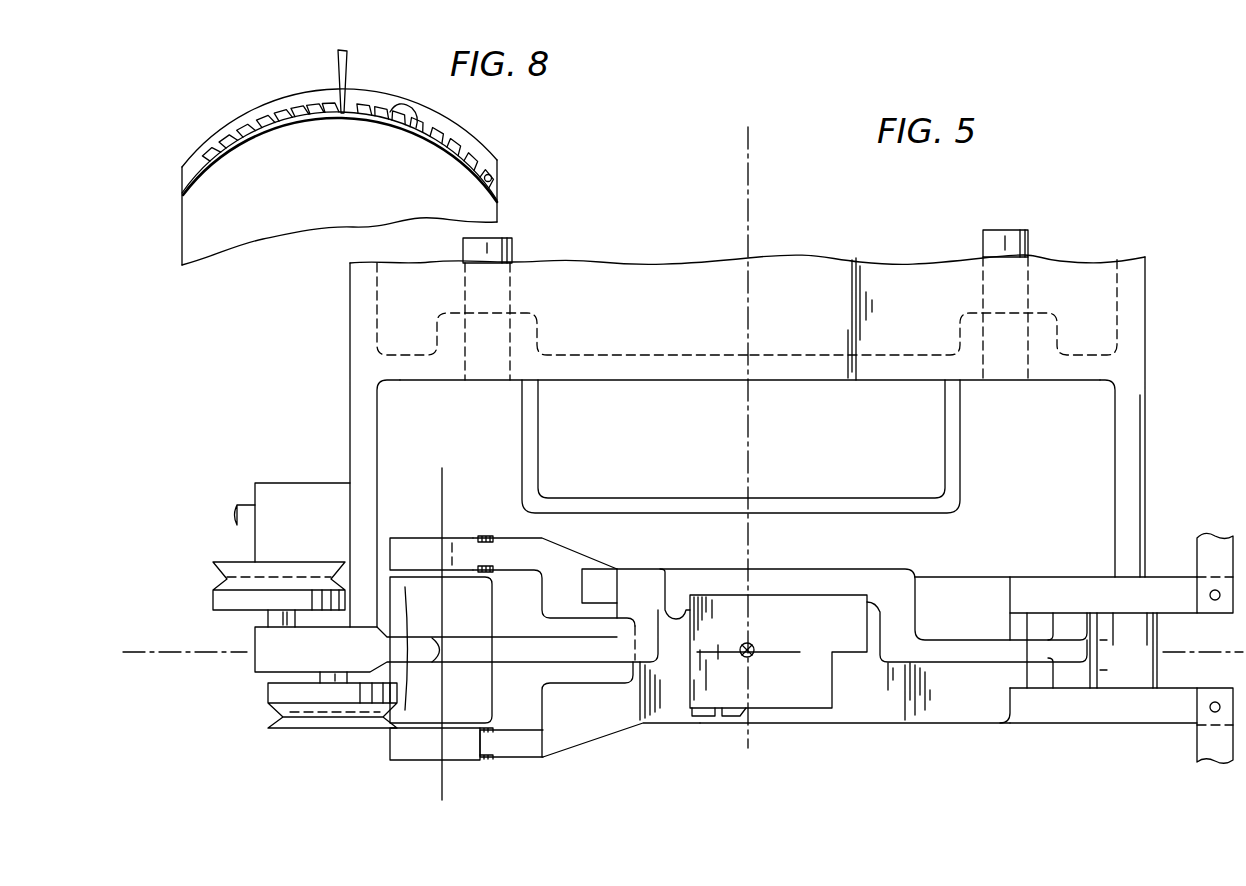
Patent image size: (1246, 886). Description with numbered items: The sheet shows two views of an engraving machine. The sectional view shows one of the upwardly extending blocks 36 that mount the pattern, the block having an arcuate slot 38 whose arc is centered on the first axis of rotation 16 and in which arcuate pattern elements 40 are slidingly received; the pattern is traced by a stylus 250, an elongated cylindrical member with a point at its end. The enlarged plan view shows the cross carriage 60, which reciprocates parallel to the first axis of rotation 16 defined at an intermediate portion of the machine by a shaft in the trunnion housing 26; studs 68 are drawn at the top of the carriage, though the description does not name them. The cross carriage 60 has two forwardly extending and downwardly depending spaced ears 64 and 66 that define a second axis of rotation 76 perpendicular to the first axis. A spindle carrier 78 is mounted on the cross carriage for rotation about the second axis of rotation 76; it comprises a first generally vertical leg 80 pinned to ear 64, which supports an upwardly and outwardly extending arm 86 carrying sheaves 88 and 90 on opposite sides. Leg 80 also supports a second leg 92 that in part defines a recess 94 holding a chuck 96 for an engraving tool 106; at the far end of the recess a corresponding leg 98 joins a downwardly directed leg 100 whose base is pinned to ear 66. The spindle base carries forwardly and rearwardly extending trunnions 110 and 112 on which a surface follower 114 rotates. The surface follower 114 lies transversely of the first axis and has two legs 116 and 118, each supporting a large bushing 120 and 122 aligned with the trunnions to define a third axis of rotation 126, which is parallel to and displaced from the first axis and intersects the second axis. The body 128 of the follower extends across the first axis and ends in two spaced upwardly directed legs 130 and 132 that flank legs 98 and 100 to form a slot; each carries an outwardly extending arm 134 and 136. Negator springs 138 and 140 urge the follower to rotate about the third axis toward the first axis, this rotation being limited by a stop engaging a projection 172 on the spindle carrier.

In FIG. 5, the first axis of rotation 16 is at (748, 152).
In FIG. 5, the trunnion housing 26 is at (640, 388).
In FIG. 8, the upwardly extending blocks 36 is at (187, 222).
In FIG. 8, the arcuate slot 38 is at (492, 179).
In FIG. 8, the arcuate pattern elements 40 is at (228, 140).
In FIG. 5, the cross carriage 60 is at (782, 263).
In FIG. 5, the ear 64 is at (351, 405).
In FIG. 5, the ear 66 is at (1146, 428).
In FIG. 5, the mounting studs 68 is at (506, 241).
In FIG. 5, the second axis of rotation 76 is at (148, 652).
In FIG. 5, the spindle carrier 78 is at (892, 570).
In FIG. 5, the first leg 80 is at (430, 680).
In FIG. 5, the arm 86 is at (413, 647).
In FIG. 5, the sheave 88 is at (220, 603).
In FIG. 5, the sheave 90 is at (270, 690).
In FIG. 5, the second leg 92 is at (540, 643).
In FIG. 5, the recess 94 is at (683, 604).
In FIG. 5, the chuck 96 is at (772, 695).
In FIG. 5, the leg 98 is at (942, 657).
In FIG. 5, the downwardly directed leg 100 is at (1070, 680).
In FIG. 5, the engraving tool 106 is at (752, 645).
In FIG. 5, the trunnion 110 is at (462, 708).
In FIG. 5, the trunnion 112 is at (467, 575).
In FIG. 5, the surface follower 114 is at (585, 741).
In FIG. 5, the leg 116 is at (557, 723).
In FIG. 5, the leg 118 is at (587, 548).
In FIG. 5, the bushing 120 is at (416, 745).
In FIG. 5, the bushing 122 is at (417, 540).
In FIG. 5, the third axis of rotation 126 is at (443, 502).
In FIG. 5, the body 128 is at (880, 707).
In FIG. 5, the upwardly directed leg 130 is at (1008, 707).
In FIG. 5, the upwardly directed leg 132 is at (1000, 580).
In FIG. 5, the outwardly extending arm 134 is at (1135, 705).
In FIG. 5, the outwardly extending arm 136 is at (1075, 587).
In FIG. 5, the negator spring 138 is at (1218, 537).
In FIG. 5, the negator spring 140 is at (1207, 747).
In FIG. 5, the projection 172 is at (603, 580).
In FIG. 8, the stylus 250 is at (338, 62).